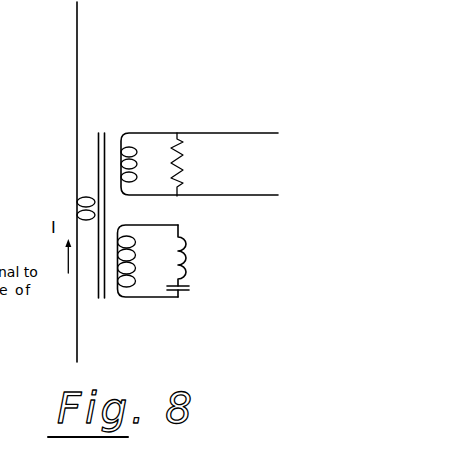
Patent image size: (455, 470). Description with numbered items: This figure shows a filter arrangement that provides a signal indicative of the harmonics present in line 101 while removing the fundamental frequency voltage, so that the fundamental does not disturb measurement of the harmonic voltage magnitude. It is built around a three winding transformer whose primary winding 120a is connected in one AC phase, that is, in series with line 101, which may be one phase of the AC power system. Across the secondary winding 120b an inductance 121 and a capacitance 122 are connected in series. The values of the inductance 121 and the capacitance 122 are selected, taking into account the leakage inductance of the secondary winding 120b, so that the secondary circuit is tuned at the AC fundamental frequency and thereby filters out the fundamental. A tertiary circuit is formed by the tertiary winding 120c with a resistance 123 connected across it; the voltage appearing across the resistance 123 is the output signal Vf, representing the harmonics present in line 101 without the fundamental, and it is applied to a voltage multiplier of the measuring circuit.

The line 101 is at (77, 332).
The primary winding 120a is at (78, 202).
The secondary winding 120b is at (155, 247).
The tertiary winding 120c is at (138, 148).
The inductance 121 is at (183, 239).
The capacitance 122 is at (190, 288).
The resistance 123 is at (184, 152).